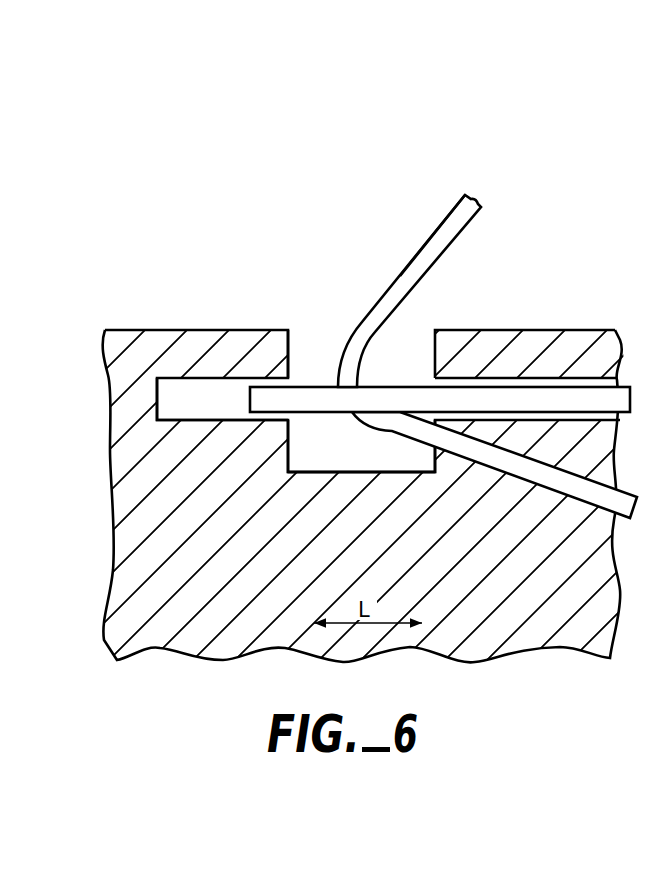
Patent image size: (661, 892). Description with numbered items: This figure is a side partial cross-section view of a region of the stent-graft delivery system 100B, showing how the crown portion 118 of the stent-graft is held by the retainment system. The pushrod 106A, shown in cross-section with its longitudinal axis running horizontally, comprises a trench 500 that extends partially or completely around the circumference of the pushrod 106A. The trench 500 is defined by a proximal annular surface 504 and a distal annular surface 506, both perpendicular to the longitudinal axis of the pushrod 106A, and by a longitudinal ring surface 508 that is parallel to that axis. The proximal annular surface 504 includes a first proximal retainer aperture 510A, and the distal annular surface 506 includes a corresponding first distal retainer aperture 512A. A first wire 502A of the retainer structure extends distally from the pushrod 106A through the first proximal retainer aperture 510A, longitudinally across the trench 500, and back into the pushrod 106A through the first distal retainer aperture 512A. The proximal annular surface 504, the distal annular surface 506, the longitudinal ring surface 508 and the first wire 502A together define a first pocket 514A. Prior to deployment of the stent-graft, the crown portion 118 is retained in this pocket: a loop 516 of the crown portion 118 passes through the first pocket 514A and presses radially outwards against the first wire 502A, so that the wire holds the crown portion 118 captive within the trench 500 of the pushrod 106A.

The stent-graft delivery system 100B is at (260, 230).
The crown portion 118 is at (437, 227).
The loop 516 is at (438, 248).
The first distal retainer aperture 512A is at (296, 368).
The first proximal retainer aperture 510A is at (423, 371).
The first wire 502A is at (512, 390).
The first pocket 514A is at (357, 451).
The distal annular surface 506 is at (289, 437).
The trench 500 is at (333, 456).
The longitudinal ring surface 508 is at (352, 473).
The proximal annular surface 504 is at (437, 468).
The pushrod 106A is at (307, 570).